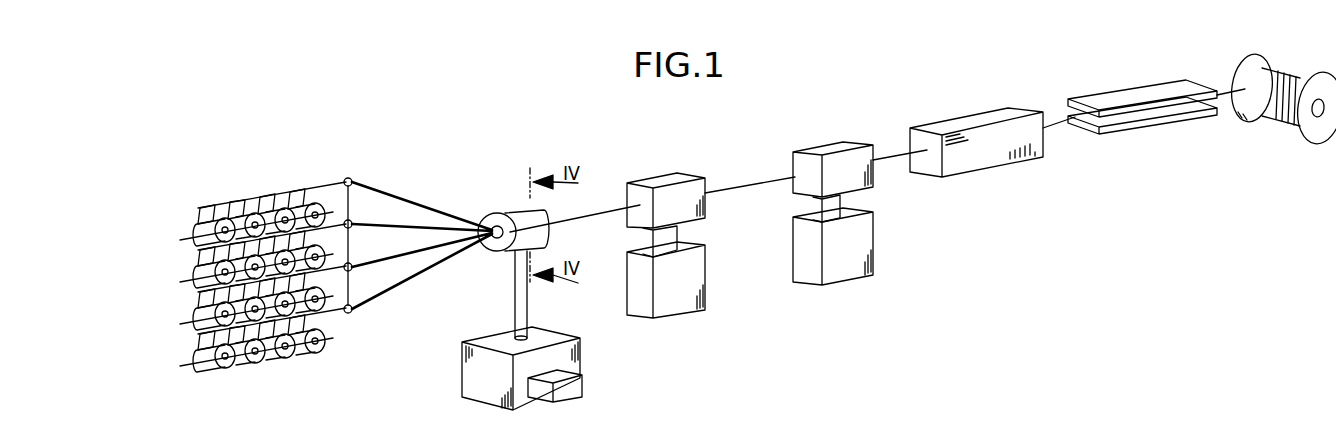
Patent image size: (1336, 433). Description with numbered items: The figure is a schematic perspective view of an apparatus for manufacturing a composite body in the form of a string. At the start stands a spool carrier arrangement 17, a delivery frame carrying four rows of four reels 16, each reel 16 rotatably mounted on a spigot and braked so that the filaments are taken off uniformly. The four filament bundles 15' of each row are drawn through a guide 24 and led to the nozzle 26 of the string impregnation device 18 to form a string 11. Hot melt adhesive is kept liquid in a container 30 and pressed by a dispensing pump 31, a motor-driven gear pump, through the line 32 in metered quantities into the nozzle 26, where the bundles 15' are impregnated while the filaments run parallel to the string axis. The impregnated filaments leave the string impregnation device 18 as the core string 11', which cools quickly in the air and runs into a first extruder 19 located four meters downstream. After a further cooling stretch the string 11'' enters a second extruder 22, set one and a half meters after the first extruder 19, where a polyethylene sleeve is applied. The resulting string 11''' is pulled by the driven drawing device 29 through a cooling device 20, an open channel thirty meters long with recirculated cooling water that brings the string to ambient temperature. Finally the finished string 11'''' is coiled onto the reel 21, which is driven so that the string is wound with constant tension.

The string 11 is at (497, 208).
The core string 11' is at (575, 187).
The string 11'' is at (750, 162).
The string 11''' is at (900, 126).
The finished string 11'''' is at (1139, 90).
The filament bundles 15' is at (330, 239).
The reels 16 is at (203, 222).
The spool carrier arrangement 17 is at (283, 180).
The string impregnation device 18 is at (548, 232).
The first extruder 19 is at (658, 180).
The cooling device 20 is at (958, 122).
The reel 21 is at (1265, 97).
The second extruder 22 is at (827, 147).
The guide 24 is at (352, 180).
The nozzle 26 is at (496, 252).
The drawing device 29 is at (1128, 127).
The container 30 is at (470, 377).
The dispensing pump 31 is at (577, 388).
The line 32 is at (515, 320).